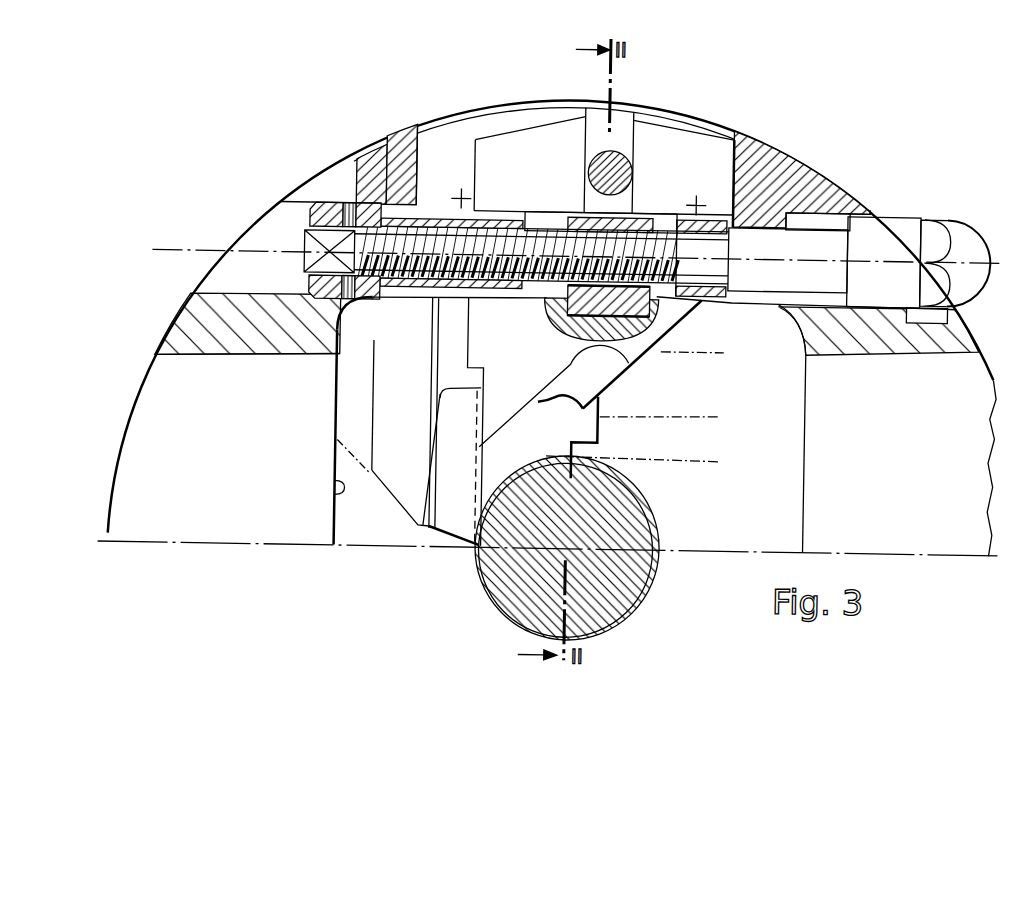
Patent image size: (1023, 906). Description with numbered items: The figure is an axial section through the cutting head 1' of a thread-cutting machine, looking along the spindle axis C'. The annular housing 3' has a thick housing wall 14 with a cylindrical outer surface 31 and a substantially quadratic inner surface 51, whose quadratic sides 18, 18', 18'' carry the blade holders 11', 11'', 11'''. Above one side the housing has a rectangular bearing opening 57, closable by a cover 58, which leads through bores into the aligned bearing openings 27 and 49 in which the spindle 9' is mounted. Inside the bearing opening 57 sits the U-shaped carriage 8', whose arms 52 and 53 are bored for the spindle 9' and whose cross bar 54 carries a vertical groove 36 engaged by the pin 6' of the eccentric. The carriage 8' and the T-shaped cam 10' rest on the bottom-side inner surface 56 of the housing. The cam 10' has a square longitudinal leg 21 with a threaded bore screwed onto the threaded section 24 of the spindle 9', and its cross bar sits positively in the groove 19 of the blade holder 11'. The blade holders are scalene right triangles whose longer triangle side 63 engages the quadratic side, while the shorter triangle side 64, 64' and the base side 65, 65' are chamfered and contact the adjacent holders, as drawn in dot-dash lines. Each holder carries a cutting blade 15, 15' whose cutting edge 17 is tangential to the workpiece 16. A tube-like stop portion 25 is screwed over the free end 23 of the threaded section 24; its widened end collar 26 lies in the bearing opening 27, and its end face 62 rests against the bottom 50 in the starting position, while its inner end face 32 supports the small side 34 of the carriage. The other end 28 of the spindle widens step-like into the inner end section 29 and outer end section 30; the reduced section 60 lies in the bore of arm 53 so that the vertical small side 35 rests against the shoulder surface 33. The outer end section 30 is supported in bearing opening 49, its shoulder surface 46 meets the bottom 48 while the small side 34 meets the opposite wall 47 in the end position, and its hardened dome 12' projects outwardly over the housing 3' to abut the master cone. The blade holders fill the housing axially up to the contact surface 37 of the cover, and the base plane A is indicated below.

The cutting head 1' is at (337, 470).
The annular housing 3' is at (343, 151).
The pin 6' is at (607, 124).
The carriage 8' is at (543, 163).
The spindle 9' is at (300, 209).
The cam 10' is at (693, 331).
The blade holder 11' is at (405, 412).
The blade holder 11'' is at (384, 498).
The blade holder 11''' is at (654, 477).
The dome 12' is at (977, 238).
The housing wall 14 is at (195, 387).
The cutting blade 15 is at (451, 489).
The cutting blade 15' is at (589, 432).
The workpiece 16 is at (564, 637).
The cutting edge 17 is at (481, 546).
The quadratic side 18 is at (391, 386).
The quadratic side 18' is at (302, 480).
The quadratic side 18'' is at (790, 454).
The groove 19 is at (566, 337).
The longitudinal leg 21 is at (642, 215).
The free end 23 is at (353, 218).
The threaded section 24 is at (430, 298).
The stop portion 25 is at (407, 197).
The end collar 26 is at (315, 209).
The bearing opening 27 is at (244, 245).
The other end 28 is at (670, 241).
The inner end section 29 is at (815, 222).
The outer end section 30 is at (880, 228).
The outer surface 31 is at (179, 322).
The inner end face 32 is at (480, 218).
The shoulder surface 33 is at (715, 222).
The small side 34 is at (469, 144).
The vertical small side 35 is at (739, 144).
The vertical groove 36 is at (615, 119).
The contact surface 37 is at (927, 214).
The shoulder surface 46 is at (834, 202).
The opposite wall 47 is at (406, 137).
The bottom 48 is at (787, 213).
The bearing opening 49 is at (833, 295).
The bottom 50 is at (361, 218).
The inner surface 51 is at (801, 334).
The arm 52 is at (510, 296).
The arm 53 is at (725, 300).
The cross bar 54 is at (547, 164).
The inner surface 56 is at (329, 320).
The bearing opening 57 is at (500, 116).
The cover 58 is at (445, 110).
The section 60 is at (714, 271).
The end face 62 is at (370, 216).
The longer triangle side 63 is at (435, 226).
The shorter triangle side 64 is at (414, 350).
The triangle side 64' is at (646, 429).
The base side 65 is at (620, 354).
The base side 65' is at (315, 455).
The base plane A is at (252, 545).
The spindle axis C' is at (571, 230).